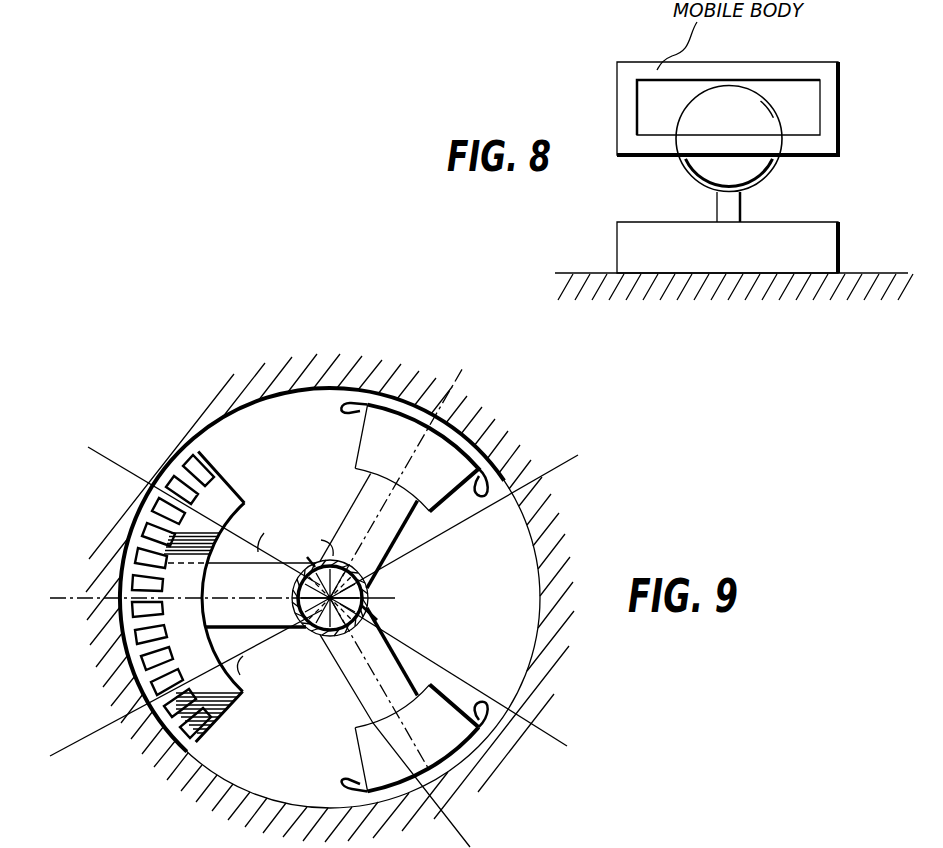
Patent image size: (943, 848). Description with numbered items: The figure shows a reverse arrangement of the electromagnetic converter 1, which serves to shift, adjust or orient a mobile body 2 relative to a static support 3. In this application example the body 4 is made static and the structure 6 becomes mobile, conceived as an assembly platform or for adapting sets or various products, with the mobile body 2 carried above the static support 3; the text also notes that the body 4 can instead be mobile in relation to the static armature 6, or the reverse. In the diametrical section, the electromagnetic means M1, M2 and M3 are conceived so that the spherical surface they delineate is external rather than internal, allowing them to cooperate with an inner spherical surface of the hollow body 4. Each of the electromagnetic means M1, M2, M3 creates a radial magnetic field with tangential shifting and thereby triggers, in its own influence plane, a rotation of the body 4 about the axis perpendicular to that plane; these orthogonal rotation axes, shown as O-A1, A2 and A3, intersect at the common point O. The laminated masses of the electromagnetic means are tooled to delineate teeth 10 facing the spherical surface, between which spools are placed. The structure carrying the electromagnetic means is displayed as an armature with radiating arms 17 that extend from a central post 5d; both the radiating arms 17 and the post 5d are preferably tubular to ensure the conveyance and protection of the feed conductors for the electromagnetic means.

In FIG. 8, the electromagnetic converter 1 is at (798, 180).
In FIG. 8, the mobile body 2 is at (617, 238).
In FIG. 8, the static support 3 is at (870, 275).
In FIG. 8, the structure 6 is at (617, 78).
In FIG. 9, the structure 6 is at (302, 630).
In FIG. 9, the body 4 is at (268, 384).
In FIG. 9, the teeth 10 is at (140, 520).
In FIG. 9, the radiating arms 17 is at (343, 522).
In FIG. 9, the post 5d is at (374, 618).
In FIG. 9, the electromagnetic means M1 is at (232, 706).
In FIG. 9, the electromagnetic means M2 is at (373, 733).
In FIG. 9, the electromagnetic means M3 is at (368, 447).
In FIG. 9, the rotation axis A2 is at (186, 683).
In FIG. 9, the rotation axis A3 is at (204, 516).
In FIG. 9, the rotation axis through common point O O-A1 is at (222, 561).